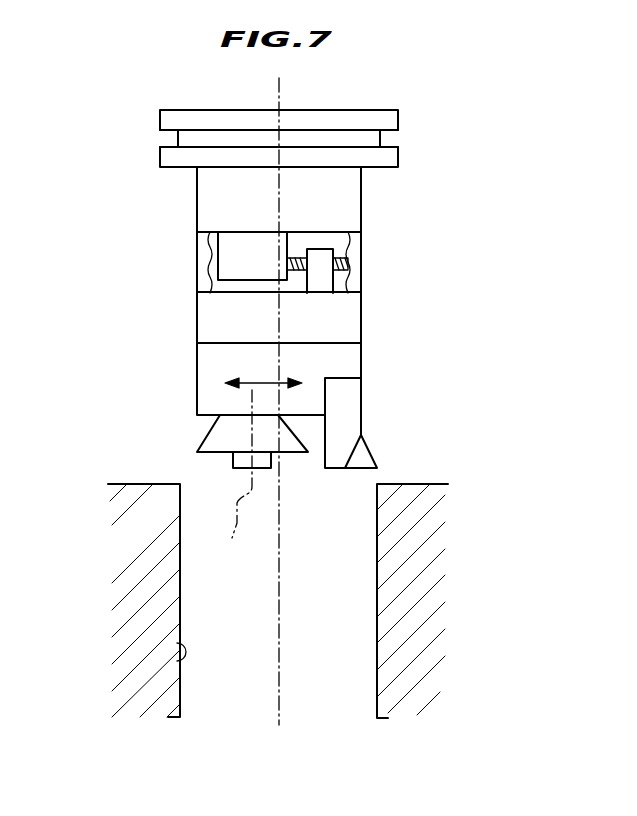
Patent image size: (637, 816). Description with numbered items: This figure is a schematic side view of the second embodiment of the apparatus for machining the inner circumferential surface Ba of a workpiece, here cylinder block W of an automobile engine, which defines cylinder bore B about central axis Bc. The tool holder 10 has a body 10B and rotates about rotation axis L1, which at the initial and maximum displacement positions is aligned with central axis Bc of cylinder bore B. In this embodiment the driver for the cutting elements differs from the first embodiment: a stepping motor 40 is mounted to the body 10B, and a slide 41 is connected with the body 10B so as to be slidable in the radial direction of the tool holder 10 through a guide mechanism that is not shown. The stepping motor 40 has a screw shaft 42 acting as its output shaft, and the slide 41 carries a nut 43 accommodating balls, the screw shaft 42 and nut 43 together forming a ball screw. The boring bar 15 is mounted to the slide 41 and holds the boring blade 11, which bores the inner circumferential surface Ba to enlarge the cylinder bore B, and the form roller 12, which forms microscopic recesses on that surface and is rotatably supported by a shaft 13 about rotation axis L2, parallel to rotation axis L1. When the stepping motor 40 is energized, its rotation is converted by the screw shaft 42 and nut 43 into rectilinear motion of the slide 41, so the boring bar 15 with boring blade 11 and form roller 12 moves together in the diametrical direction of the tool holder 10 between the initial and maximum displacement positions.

The tool holder 10 is at (398, 110).
The body 10B is at (350, 203).
The stepping motor 40 is at (228, 257).
The slide 41 is at (218, 320).
The screw shaft 42 is at (347, 267).
The nut 43 is at (322, 282).
The boring bar 15 is at (347, 358).
The boring blade 11 is at (363, 457).
The form roller 12 is at (218, 437).
The shaft 13 is at (243, 463).
The rotation axis L1 is at (280, 623).
The rotation axis L2 is at (232, 477).
The central axis Bc is at (316, 662).
The cylinder bore B is at (202, 586).
The inner circumferential surface Ba is at (177, 643).
The cylinder block W is at (428, 578).